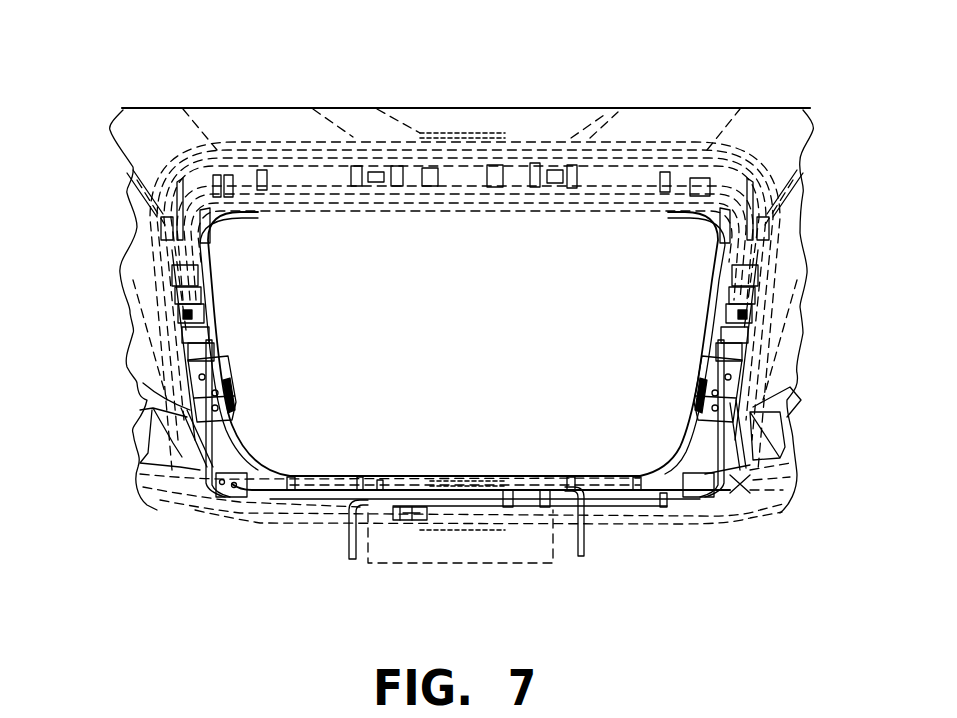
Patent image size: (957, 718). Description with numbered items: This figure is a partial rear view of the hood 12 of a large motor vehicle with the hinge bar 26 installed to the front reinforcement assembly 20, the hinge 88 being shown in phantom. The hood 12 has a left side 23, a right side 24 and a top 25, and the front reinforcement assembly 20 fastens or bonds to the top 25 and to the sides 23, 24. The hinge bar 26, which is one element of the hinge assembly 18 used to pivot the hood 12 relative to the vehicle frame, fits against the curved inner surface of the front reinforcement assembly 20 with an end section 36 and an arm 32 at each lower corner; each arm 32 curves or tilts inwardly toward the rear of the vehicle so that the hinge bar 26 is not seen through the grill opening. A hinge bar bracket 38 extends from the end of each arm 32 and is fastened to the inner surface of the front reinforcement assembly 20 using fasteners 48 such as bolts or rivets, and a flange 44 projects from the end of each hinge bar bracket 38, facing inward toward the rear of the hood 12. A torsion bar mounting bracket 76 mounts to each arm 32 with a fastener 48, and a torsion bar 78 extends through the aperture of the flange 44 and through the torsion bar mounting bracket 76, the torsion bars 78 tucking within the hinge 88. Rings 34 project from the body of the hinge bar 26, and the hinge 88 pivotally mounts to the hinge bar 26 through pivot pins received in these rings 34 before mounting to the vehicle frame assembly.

The hood 12 is at (287, 118).
The front reinforcement assembly 20 is at (512, 170).
The top 25 is at (638, 135).
The right side 24 is at (780, 253).
The flange 44 is at (753, 363).
The left side 23 is at (133, 345).
The hinge bar bracket 38 is at (227, 400).
The torsion bar mounting bracket 76 is at (240, 480).
The hinge bar 26 is at (480, 483).
The fastener 48 is at (703, 393).
The arm 32 is at (683, 467).
The end section 36 is at (663, 490).
The hinge assembly 18 is at (227, 493).
The torsion bar 78 is at (587, 540).
The ring 34 is at (403, 521).
The hinge 88 is at (517, 553).